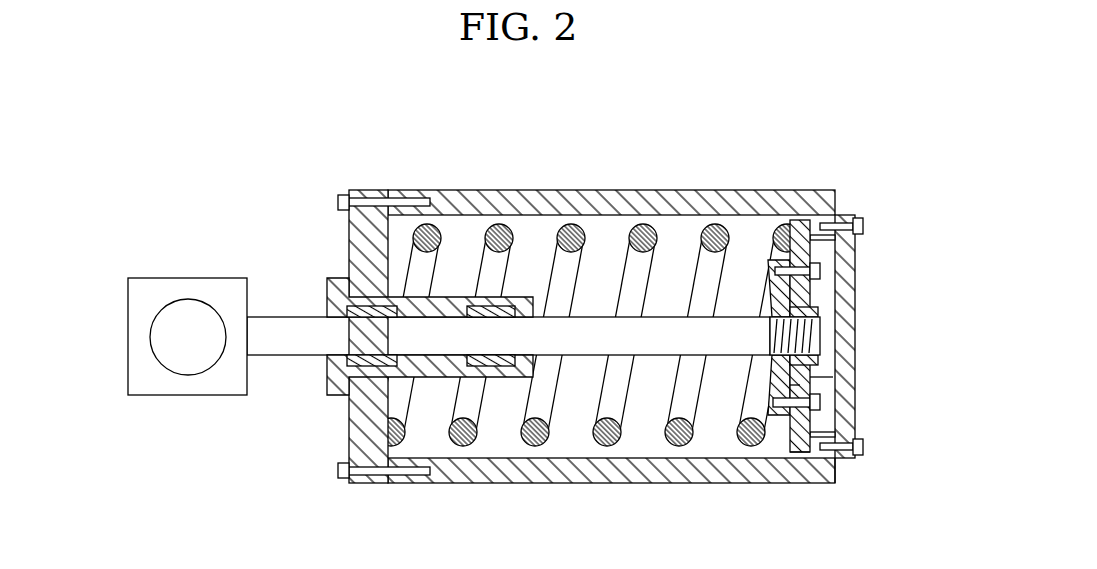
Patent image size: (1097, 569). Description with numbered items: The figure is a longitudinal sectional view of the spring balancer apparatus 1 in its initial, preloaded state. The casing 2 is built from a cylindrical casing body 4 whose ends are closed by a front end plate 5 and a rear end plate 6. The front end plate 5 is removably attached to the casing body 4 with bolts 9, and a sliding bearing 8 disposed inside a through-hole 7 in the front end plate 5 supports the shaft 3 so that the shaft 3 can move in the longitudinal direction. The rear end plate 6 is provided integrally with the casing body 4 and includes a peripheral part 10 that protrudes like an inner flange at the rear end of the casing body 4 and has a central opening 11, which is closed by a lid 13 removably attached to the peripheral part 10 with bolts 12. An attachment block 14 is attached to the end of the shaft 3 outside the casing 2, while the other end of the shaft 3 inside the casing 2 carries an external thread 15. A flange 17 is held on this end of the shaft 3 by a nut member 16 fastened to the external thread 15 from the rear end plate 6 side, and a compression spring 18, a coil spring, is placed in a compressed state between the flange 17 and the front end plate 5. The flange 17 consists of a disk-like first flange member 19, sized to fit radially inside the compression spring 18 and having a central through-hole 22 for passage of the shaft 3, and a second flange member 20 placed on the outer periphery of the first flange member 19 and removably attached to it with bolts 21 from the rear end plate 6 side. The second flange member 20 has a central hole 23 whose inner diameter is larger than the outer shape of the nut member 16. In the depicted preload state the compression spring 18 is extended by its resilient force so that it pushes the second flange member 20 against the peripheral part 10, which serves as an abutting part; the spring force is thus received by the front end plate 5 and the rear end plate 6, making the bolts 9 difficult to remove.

The spring balancer apparatus 1 is at (220, 179).
The casing 2 is at (558, 176).
The shaft 3 is at (577, 375).
The casing body 4 is at (646, 190).
The front end plate 5 is at (346, 240).
The rear end plate 6 is at (870, 300).
The through-hole 7 is at (383, 349).
The sliding bearing 8 is at (328, 376).
The bolts 9 is at (338, 202).
The peripheral part 10 is at (838, 476).
The central opening 11 is at (828, 424).
The bolts 12 is at (867, 226).
The lid 13 is at (856, 342).
The attachment block 14 is at (127, 333).
The external thread 15 is at (805, 330).
The nut member 16 is at (812, 377).
The flange 17 is at (752, 295).
The compression spring 18 is at (472, 437).
The first flange member 19 is at (747, 407).
The second flange member 20 is at (788, 450).
The bolts 21 is at (822, 270).
The through-hole 22 is at (772, 330).
The central hole 23 is at (792, 385).